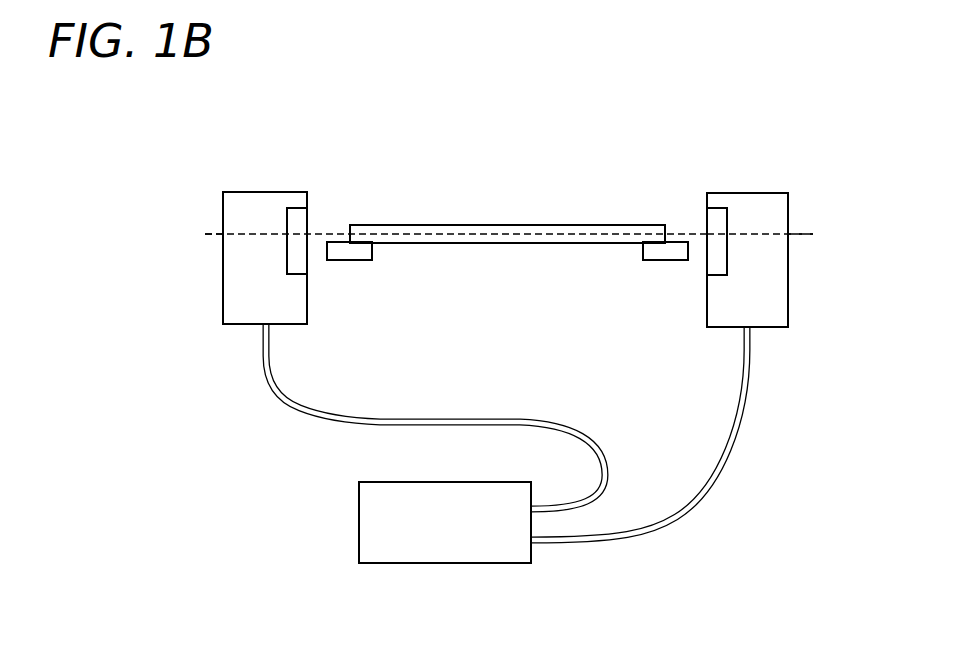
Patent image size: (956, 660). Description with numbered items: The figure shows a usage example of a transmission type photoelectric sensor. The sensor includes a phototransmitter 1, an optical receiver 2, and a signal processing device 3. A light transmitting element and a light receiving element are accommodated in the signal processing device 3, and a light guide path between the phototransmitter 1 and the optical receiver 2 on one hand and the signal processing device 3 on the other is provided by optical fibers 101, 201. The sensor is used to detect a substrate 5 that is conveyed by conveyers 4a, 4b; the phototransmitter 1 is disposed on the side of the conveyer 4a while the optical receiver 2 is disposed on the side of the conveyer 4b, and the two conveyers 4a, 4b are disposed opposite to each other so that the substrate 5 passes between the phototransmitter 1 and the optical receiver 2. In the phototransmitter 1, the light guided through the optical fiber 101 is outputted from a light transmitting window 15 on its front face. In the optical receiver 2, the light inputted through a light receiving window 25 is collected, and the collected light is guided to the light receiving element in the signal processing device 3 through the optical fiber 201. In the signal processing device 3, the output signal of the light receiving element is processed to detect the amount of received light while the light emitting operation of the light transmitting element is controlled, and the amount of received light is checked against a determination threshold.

The phototransmitter 1 is at (232, 284).
The light transmitting window 15 is at (302, 222).
The optical receiver 2 is at (778, 285).
The light receiving window 25 is at (712, 222).
The substrate 5 is at (592, 225).
The conveyer 4a is at (350, 258).
The conveyer 4b is at (666, 258).
The signal processing device 3 is at (496, 553).
The optical fiber 101 is at (297, 405).
The optical fiber 201 is at (717, 472).